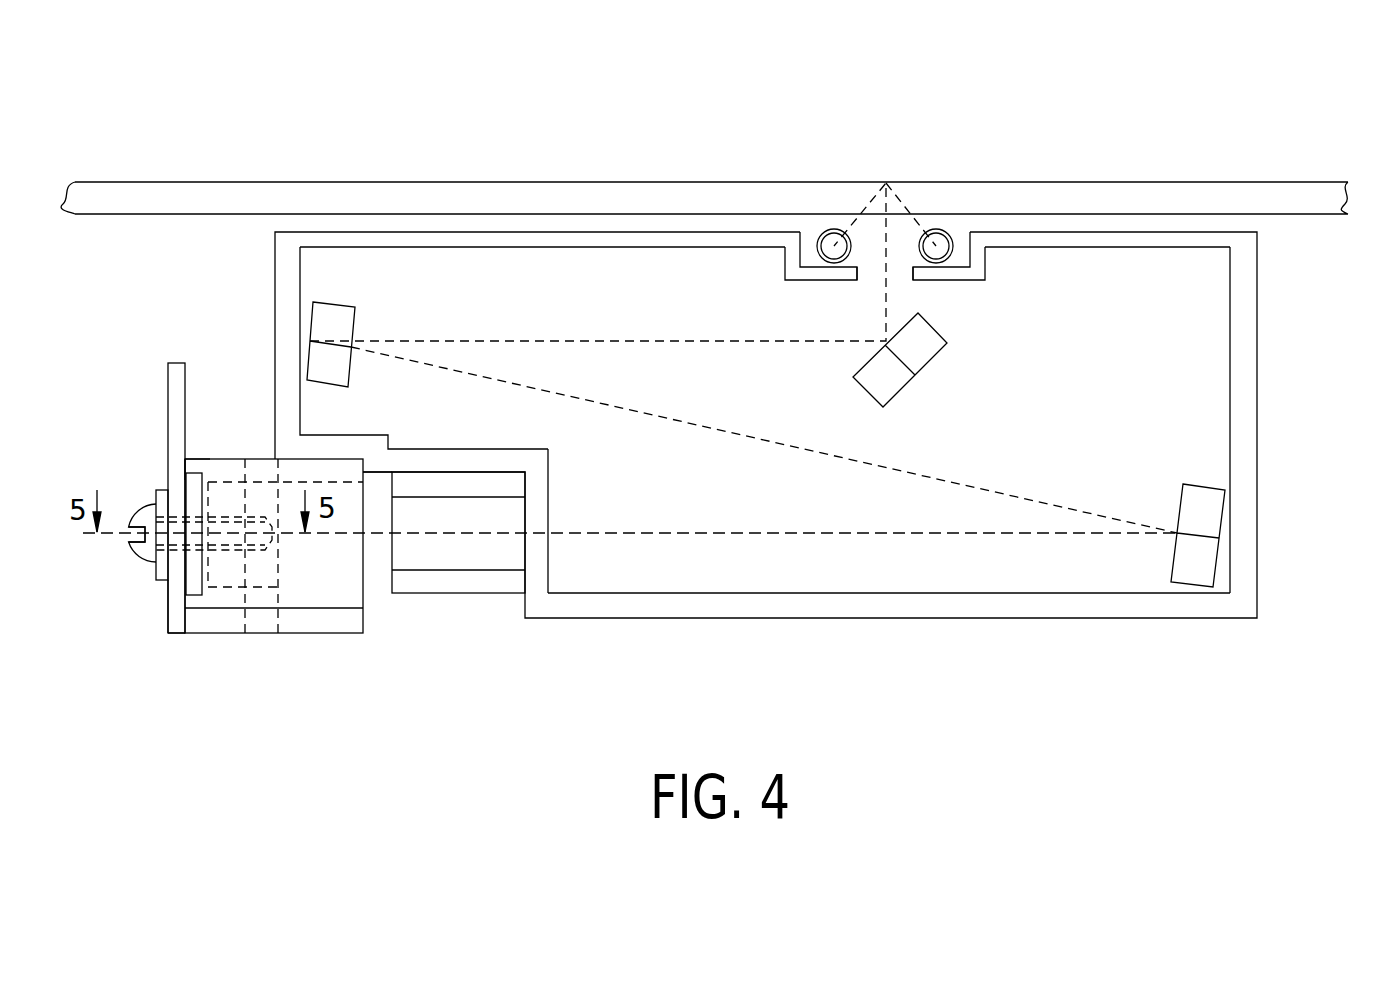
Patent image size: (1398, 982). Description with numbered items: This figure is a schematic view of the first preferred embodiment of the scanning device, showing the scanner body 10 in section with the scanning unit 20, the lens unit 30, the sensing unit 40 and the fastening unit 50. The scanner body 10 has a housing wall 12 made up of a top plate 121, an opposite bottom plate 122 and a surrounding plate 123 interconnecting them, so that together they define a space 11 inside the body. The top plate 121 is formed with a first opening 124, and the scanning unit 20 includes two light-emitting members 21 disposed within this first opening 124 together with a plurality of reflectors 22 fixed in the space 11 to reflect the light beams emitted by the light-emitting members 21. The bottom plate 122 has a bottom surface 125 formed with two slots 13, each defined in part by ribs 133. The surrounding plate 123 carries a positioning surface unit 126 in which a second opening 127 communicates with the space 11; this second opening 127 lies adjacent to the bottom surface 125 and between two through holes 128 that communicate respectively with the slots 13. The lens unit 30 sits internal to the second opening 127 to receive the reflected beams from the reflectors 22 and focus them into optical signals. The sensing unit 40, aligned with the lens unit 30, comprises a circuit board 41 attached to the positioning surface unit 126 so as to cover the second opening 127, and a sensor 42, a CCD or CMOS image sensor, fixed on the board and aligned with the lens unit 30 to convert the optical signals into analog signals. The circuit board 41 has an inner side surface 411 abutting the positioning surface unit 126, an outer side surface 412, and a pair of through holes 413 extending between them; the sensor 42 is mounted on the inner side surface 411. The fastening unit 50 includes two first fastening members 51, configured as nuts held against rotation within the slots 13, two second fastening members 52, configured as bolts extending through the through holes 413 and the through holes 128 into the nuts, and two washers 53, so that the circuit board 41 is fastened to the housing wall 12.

The scanner body 10 is at (1253, 433).
The space 11 is at (1208, 340).
The housing wall 12 is at (1250, 502).
The slots 13 is at (230, 625).
The scanning unit 20 is at (993, 300).
The light-emitting members 21 is at (937, 230).
The reflectors 22 is at (927, 360).
The lens unit 30 is at (470, 562).
The sensing unit 40 is at (141, 517).
The circuit board 41 is at (167, 362).
The sensor 42 is at (187, 458).
The fastening unit 50 is at (140, 497).
The first fastening members 51 is at (235, 567).
The second fastening members 52 is at (135, 515).
The washers 53 is at (165, 493).
The top plate 121 is at (1100, 245).
The bottom plate 122 is at (1067, 608).
The surrounding plate 123 is at (285, 274).
The first opening 124 is at (903, 272).
The bottom surface 125 is at (977, 618).
The positioning surface unit 126 is at (197, 459).
The second opening 127 is at (193, 610).
The through holes 128 is at (168, 590).
The ribs 133 is at (268, 583).
The inner side surface 411 is at (178, 612).
The outer side surface 412 is at (165, 630).
The through holes 413 is at (145, 570).